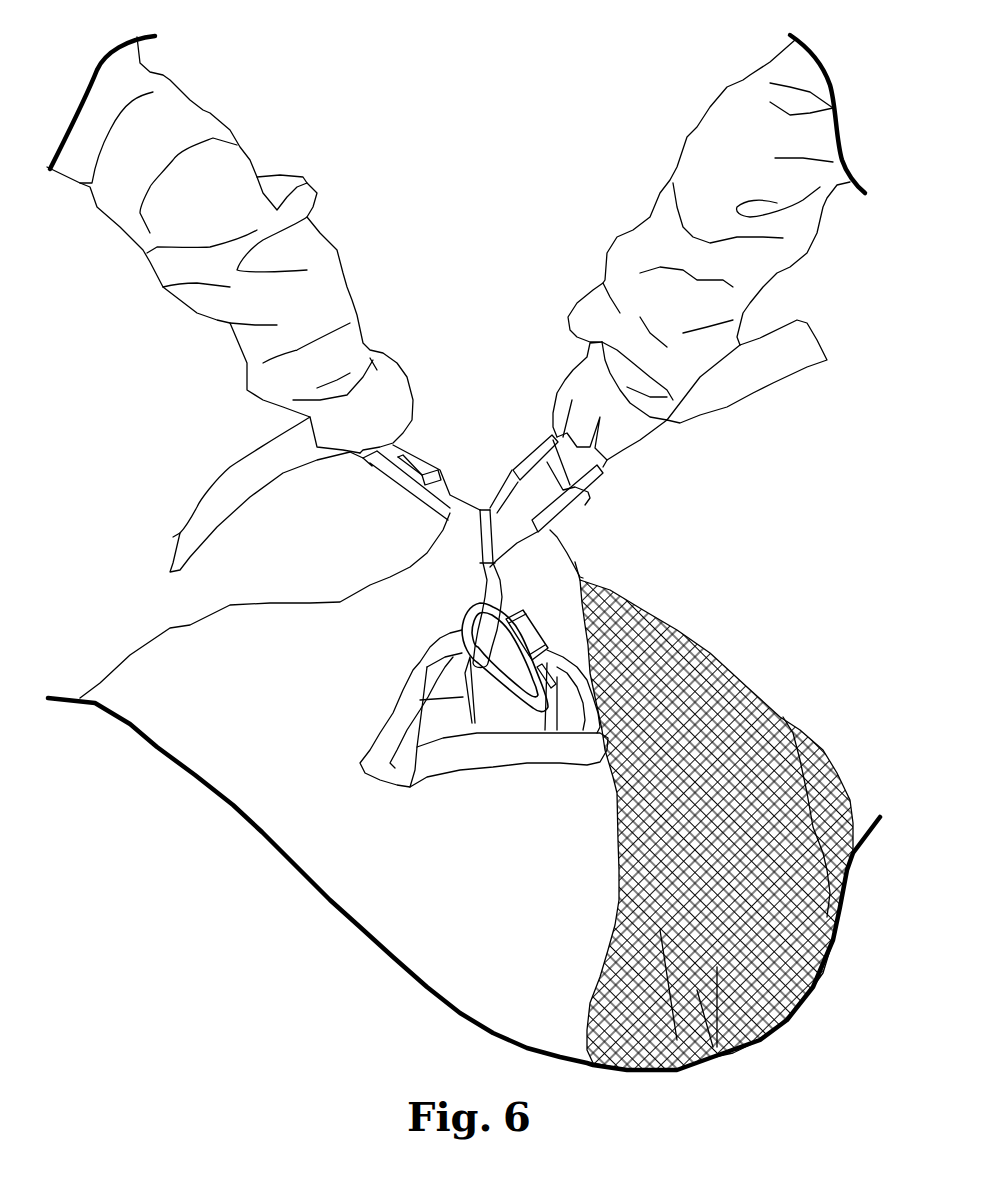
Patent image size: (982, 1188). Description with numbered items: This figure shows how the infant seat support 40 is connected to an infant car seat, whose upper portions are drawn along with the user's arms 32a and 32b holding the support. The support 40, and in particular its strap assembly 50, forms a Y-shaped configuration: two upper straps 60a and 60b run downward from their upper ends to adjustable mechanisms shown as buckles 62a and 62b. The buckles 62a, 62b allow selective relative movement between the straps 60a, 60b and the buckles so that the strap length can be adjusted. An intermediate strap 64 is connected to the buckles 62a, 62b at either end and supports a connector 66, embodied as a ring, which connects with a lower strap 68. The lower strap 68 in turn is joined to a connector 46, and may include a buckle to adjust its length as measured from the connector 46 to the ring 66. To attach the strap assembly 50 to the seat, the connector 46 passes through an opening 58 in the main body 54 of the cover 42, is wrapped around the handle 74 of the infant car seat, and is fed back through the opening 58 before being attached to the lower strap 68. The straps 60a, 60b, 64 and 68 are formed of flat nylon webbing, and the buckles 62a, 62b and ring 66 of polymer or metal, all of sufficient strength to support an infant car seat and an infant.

The left arm of user 32a is at (205, 118).
The right arm of user 32b is at (698, 148).
The support 40 is at (542, 501).
The cover 42 is at (849, 745).
The connector 46 is at (507, 603).
The strap assembly 50 is at (803, 343).
The main body 54 is at (263, 780).
The opening 58 is at (443, 763).
The upper strap 60a is at (225, 493).
The upper strap 60b is at (757, 378).
The buckle 62a is at (387, 480).
The buckle 62b is at (557, 505).
The intermediate strap 64 is at (507, 497).
The connector 66 is at (483, 510).
The lower strap 68 is at (480, 583).
The handle 74 is at (500, 723).